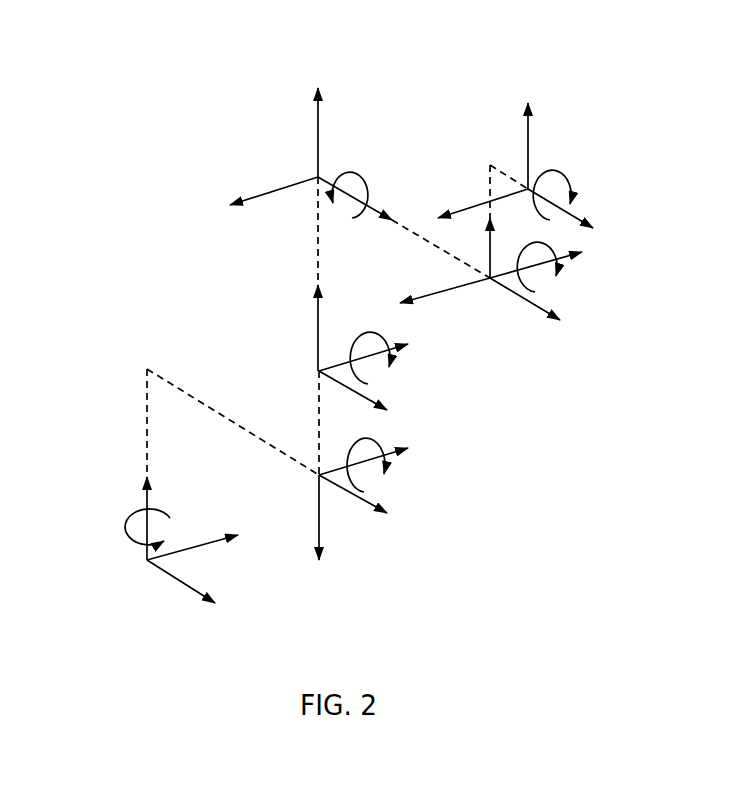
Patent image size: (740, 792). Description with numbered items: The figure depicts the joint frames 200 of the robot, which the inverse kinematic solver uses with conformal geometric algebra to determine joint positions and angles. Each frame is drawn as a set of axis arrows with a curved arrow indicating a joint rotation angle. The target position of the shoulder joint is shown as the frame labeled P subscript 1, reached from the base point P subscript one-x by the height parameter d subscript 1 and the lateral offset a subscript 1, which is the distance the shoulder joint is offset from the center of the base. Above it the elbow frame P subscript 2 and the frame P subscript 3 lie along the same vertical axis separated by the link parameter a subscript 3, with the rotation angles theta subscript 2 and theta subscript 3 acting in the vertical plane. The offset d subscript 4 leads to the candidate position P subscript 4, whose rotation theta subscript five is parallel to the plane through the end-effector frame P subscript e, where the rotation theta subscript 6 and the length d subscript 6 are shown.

The joint frames 200 is at (140, 86).
The first joint coordinate frame P1 1 is at (368, 499).
The second joint coordinate frame P2 2 is at (349, 371).
The third joint coordinate frame P3 3 is at (311, 154).
The fourth joint coordinate frame P4 4 is at (491, 269).
The end-effector coordinate frame Pe (joint 6) 6 is at (516, 165).